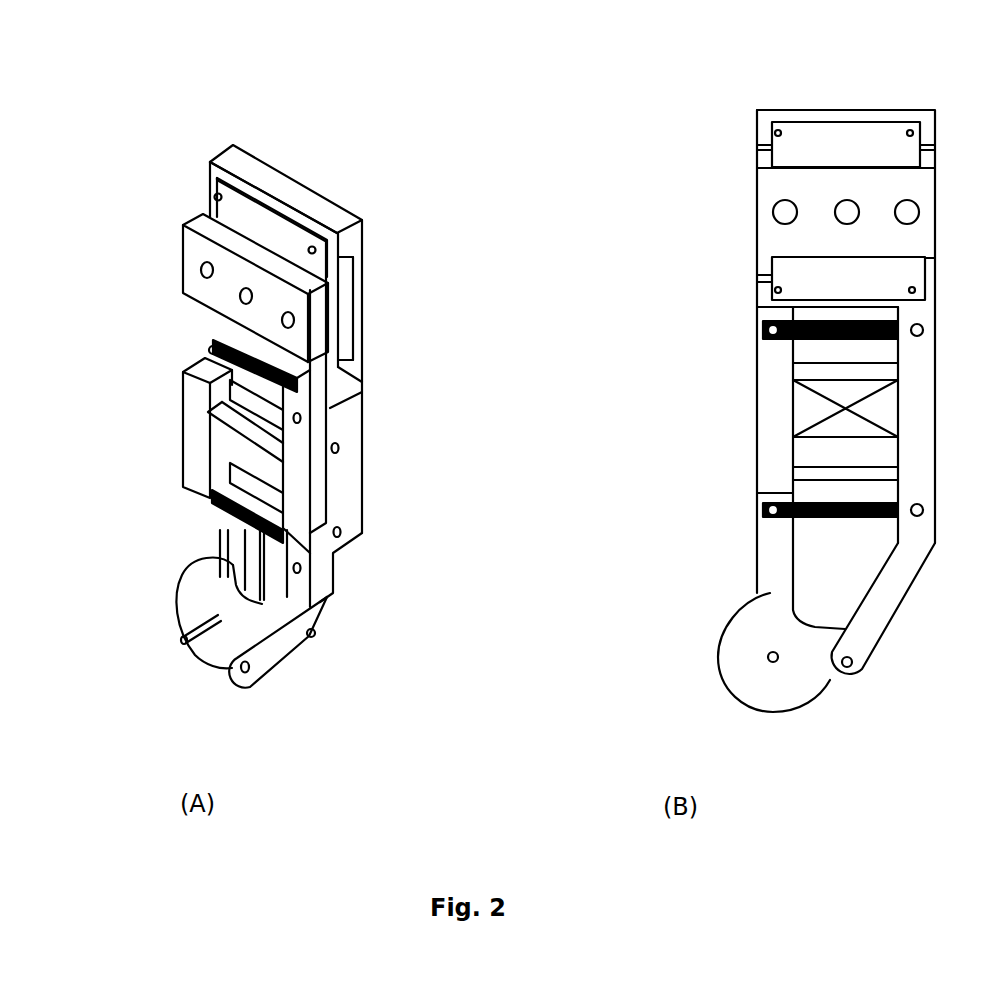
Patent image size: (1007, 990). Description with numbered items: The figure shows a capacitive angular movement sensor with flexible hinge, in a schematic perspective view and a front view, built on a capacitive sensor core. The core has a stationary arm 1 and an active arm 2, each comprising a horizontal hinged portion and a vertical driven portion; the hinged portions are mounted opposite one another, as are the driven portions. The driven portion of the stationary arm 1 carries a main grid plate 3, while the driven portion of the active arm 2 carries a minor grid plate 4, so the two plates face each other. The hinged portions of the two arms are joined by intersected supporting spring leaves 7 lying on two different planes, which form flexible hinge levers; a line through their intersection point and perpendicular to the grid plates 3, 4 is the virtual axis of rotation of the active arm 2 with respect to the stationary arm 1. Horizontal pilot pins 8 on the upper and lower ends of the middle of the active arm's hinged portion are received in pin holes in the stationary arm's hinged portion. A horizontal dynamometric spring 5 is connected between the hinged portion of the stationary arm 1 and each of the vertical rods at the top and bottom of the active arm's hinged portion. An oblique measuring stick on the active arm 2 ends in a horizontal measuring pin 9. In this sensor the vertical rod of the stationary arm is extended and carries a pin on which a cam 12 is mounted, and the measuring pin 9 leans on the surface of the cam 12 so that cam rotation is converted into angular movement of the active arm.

In FIG. 2A, the stationary arm 1 is at (257, 183).
In FIG. 2B, the stationary arm 1 is at (764, 137).
In FIG. 2A, the active arm 2 is at (207, 265).
In FIG. 2B, the active arm 2 is at (765, 207).
In FIG. 2A, the main grid plate 3 is at (270, 230).
In FIG. 2B, the main grid plate 3 is at (810, 278).
In FIG. 2A, the minor grid plate 4 is at (333, 305).
In FIG. 2A, the dynamometric spring 5 is at (217, 312).
In FIG. 2B, the dynamometric spring 5 is at (807, 320).
In FIG. 2A, the supporting spring leaves 7 is at (228, 410).
In FIG. 2B, the supporting spring leaves 7 is at (933, 457).
In FIG. 2A, the pilot pin 8 is at (232, 502).
In FIG. 2B, the pilot pin 8 is at (820, 475).
In FIG. 2A, the measuring pin 9 is at (312, 628).
In FIG. 2A, the cam 12 is at (180, 602).